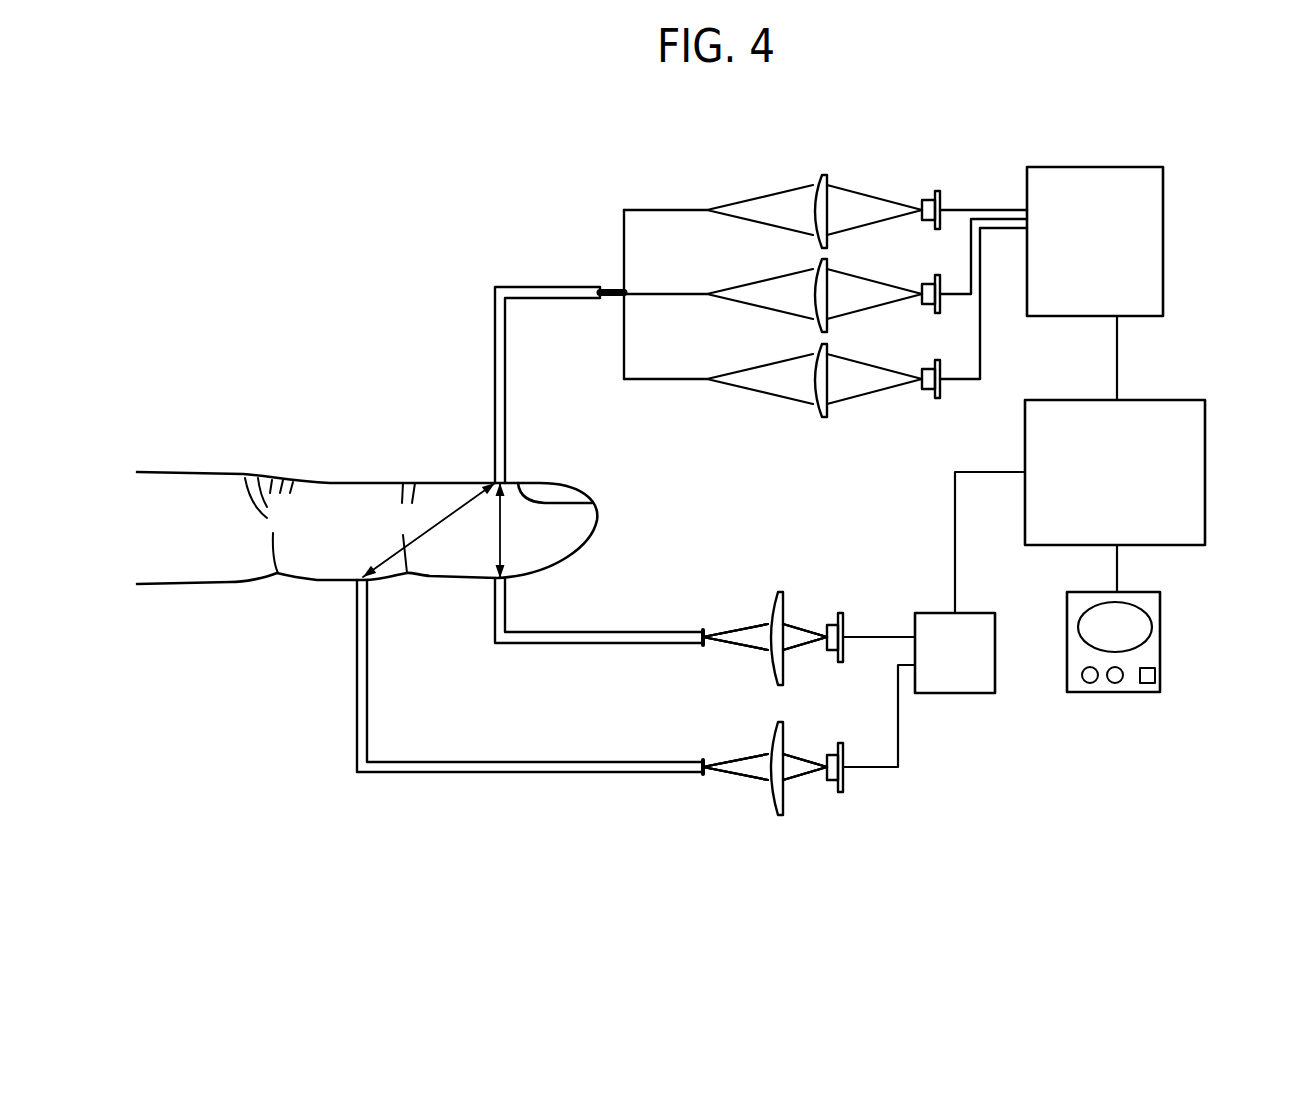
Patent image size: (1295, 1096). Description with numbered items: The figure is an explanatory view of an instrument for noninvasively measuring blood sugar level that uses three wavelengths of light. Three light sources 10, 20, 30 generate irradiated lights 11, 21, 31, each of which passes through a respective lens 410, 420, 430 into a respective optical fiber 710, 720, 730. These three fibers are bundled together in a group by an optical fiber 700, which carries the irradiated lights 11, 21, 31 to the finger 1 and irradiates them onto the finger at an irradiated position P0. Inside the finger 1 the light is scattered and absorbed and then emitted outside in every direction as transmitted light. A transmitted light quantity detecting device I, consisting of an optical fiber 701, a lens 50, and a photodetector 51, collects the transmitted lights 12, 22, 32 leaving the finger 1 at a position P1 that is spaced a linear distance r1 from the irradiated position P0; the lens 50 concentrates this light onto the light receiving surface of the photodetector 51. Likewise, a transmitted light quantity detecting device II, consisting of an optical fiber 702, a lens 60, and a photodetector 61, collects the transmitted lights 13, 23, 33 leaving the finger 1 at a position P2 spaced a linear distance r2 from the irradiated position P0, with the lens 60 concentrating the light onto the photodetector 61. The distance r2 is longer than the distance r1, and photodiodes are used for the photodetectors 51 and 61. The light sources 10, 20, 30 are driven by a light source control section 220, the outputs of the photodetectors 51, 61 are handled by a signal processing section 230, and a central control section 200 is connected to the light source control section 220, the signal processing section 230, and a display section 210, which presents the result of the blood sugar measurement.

The finger 1 is at (183, 490).
The light source 10 is at (940, 192).
The light source 20 is at (940, 313).
The light source 30 is at (933, 398).
The irradiated light 11 is at (869, 185).
The irradiated light 21 is at (862, 281).
The irradiated light 31 is at (862, 361).
The transmitted light 12 is at (739, 656).
The transmitted light 22 is at (765, 637).
The transmitted light 32 is at (765, 637).
The transmitted light 13 is at (745, 754).
The transmitted light 23 is at (765, 767).
The transmitted light 33 is at (765, 767).
The lens 410 is at (820, 176).
The lens 420 is at (818, 265).
The lens 430 is at (818, 350).
The lens 50 is at (775, 592).
The photodetector 51 is at (838, 613).
The lens 60 is at (778, 818).
The photodetector 61 is at (838, 795).
The optical fiber 700 is at (495, 350).
The optical fiber 701 is at (630, 632).
The optical fiber 702 is at (500, 776).
The optical fiber 710 is at (652, 210).
The optical fiber 720 is at (652, 294).
The optical fiber 730 is at (652, 379).
The central control section 200 is at (1195, 470).
The display section 210 is at (1143, 623).
The light source control section 220 is at (1095, 167).
The signal processing section 230 is at (955, 695).
The irradiated position P0 is at (515, 471).
The position P1 is at (481, 587).
The position P2 is at (338, 587).
The linear distance r1 is at (486, 530).
The linear distance r2 is at (420, 533).
The transmitted light quantity detecting device I is at (758, 518).
The transmitted light quantity detecting device II is at (847, 895).